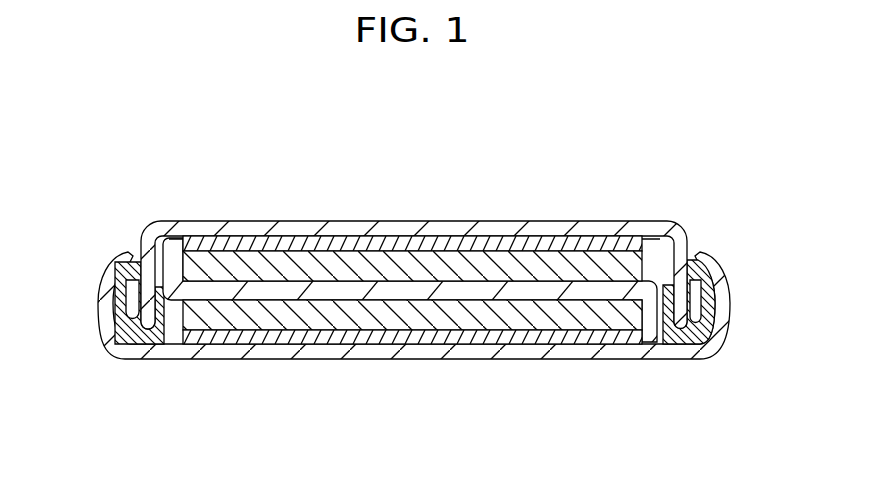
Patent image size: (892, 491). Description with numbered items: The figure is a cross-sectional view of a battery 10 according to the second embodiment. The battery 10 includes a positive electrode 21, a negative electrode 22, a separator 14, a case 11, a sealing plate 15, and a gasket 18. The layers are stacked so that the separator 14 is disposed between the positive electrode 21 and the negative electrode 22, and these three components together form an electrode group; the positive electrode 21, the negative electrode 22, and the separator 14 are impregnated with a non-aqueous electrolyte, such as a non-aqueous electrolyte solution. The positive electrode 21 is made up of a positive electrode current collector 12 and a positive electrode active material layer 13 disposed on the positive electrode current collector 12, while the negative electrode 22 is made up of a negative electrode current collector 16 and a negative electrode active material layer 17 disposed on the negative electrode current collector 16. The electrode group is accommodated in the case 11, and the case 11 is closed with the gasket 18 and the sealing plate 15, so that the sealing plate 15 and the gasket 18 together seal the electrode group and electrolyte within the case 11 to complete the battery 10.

The battery 10 is at (414, 290).
The case 11 is at (203, 356).
The positive electrode current collector 12 is at (462, 410).
The positive electrode active material layer 13 is at (444, 318).
The separator 14 is at (541, 292).
The sealing plate 15 is at (205, 228).
The negative electrode current collector 16 is at (367, 168).
The negative electrode active material layer 17 is at (378, 243).
The gasket 18 is at (683, 340).
The positive electrode 21 is at (412, 379).
The negative electrode 22 is at (412, 202).